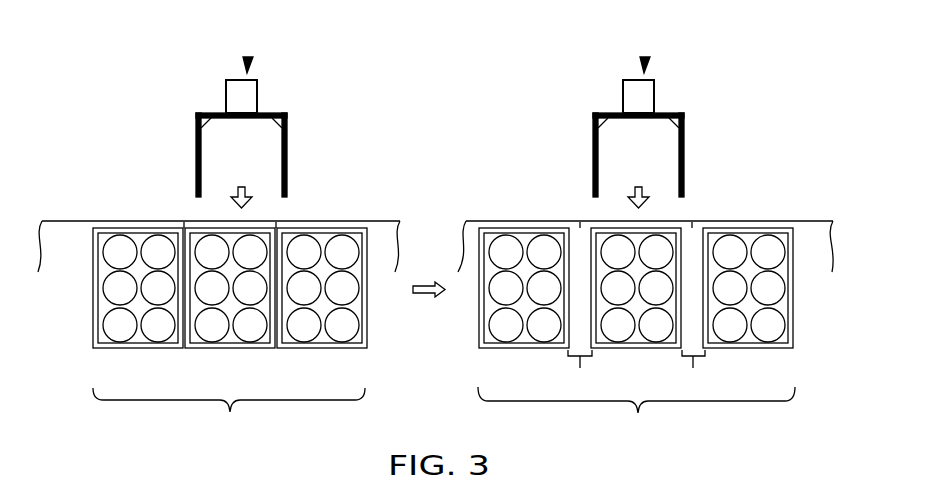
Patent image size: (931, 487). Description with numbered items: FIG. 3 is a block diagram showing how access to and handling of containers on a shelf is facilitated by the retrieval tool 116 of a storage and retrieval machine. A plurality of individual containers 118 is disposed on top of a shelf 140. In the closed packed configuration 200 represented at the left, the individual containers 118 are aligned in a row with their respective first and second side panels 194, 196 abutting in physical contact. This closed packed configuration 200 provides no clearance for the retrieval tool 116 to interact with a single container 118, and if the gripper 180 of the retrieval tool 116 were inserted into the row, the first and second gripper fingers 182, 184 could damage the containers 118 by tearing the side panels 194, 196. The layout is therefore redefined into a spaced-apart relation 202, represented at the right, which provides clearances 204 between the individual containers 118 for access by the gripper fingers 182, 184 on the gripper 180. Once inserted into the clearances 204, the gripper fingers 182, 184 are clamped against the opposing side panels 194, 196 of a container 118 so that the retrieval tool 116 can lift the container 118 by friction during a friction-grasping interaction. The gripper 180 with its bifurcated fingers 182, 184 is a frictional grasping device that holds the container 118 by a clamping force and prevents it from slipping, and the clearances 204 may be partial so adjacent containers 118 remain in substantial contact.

The retrieval tool 116 is at (248, 58).
The individual container 118 is at (138, 348).
The shelf 140 is at (80, 264).
The gripper 180 is at (268, 113).
The first gripper finger 182 is at (195, 153).
The second gripper finger 184 is at (288, 153).
The first side panel 194 is at (183, 220).
The second side panel 196 is at (277, 220).
The closed packed configuration 200 is at (229, 420).
The spaced-apart relation 202 is at (636, 419).
The clearance 204 is at (636, 373).